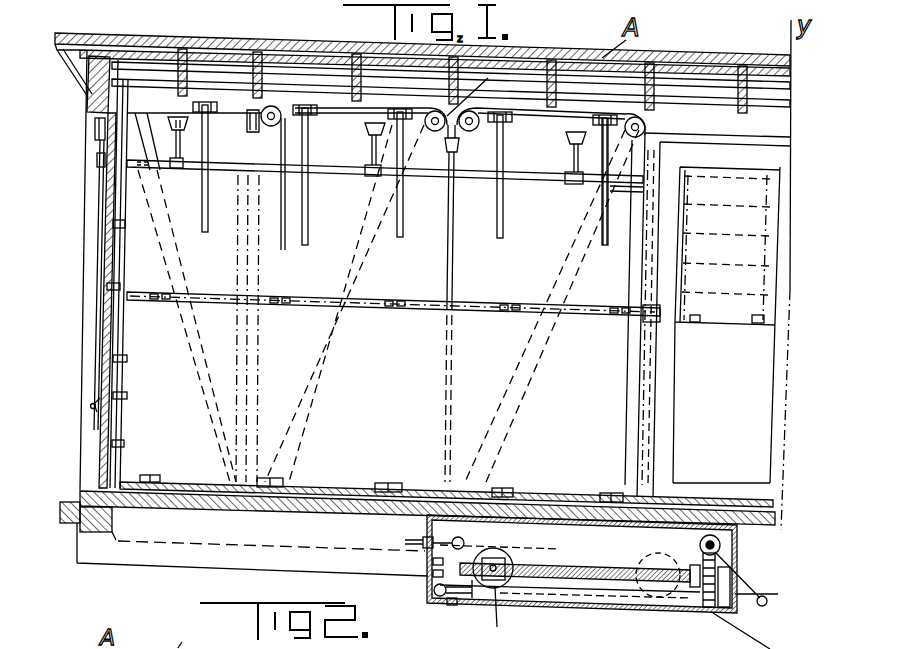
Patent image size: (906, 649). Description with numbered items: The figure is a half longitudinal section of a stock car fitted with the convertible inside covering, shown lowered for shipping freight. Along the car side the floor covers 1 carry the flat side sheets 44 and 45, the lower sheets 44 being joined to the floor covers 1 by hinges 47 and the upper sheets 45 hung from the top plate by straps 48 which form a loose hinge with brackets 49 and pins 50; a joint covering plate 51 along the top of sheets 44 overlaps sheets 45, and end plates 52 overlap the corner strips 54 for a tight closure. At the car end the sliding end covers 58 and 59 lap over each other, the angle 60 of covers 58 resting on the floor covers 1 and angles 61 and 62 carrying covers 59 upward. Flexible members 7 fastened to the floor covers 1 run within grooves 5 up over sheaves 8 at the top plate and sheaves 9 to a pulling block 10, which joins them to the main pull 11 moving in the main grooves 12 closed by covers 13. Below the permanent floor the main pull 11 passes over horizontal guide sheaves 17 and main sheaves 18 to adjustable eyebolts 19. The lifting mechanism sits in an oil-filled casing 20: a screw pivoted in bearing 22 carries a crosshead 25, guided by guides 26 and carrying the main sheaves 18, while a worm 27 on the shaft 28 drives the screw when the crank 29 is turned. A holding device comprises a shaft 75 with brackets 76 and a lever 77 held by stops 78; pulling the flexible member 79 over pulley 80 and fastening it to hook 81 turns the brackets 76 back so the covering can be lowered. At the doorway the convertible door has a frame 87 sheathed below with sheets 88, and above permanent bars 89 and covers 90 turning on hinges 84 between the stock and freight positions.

The floor covers 1 is at (572, 503).
The grooves 5 is at (303, 238).
The flexible members 7 is at (355, 102).
The sheaves 8 is at (647, 128).
The sheaves 9 is at (471, 112).
The pulling block 10 is at (458, 145).
The main pull 11 is at (450, 188).
The main grooves 12 is at (480, 625).
The covers 13 is at (450, 386).
The horizontal guide sheaves 17 is at (445, 606).
The main sheaves 18 is at (496, 556).
The adjustable eyebolts 19 is at (440, 558).
The casing 20 is at (630, 530).
The bearing 22 is at (437, 573).
The crosshead 25 is at (505, 558).
The guides 26 is at (633, 622).
The worm 27 is at (720, 547).
The shaft 28 is at (740, 560).
The crank 29 is at (765, 606).
The sheets 44 is at (452, 303).
The sheets 45 is at (241, 297).
The hinges 47 is at (146, 475).
The straps 48 is at (205, 212).
The brackets 49 is at (219, 112).
The pins 50 is at (312, 113).
The joint covering plate 51 is at (195, 303).
The plates 52 is at (133, 339).
The corner strips 54 is at (193, 638).
The sliding end covers 58 is at (120, 443).
The sliding end covers 59 is at (114, 289).
The angle 60 is at (127, 395).
The angles 61 is at (127, 360).
The angles 62 is at (125, 224).
The shaft 75 is at (280, 168).
The brackets 76 is at (556, 165).
The lever 77 is at (98, 188).
The stops 78 is at (177, 117).
The flexible member 79 is at (103, 280).
The pulley 80 is at (95, 127).
The hook 81 is at (95, 412).
The hinges 84 is at (757, 322).
The door frame 87 is at (667, 382).
The sheets 88 is at (721, 451).
The permanent bars 89 is at (699, 233).
The covers 90 is at (725, 264).